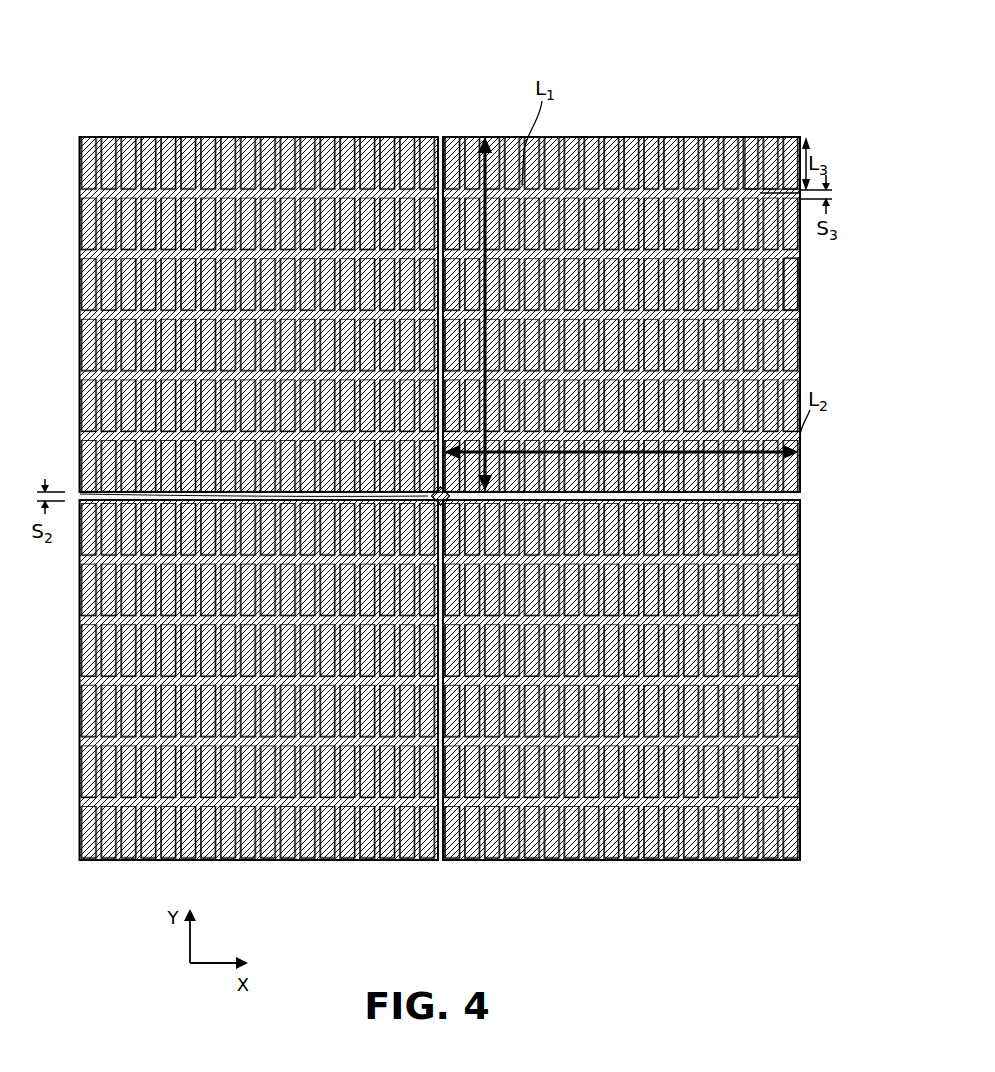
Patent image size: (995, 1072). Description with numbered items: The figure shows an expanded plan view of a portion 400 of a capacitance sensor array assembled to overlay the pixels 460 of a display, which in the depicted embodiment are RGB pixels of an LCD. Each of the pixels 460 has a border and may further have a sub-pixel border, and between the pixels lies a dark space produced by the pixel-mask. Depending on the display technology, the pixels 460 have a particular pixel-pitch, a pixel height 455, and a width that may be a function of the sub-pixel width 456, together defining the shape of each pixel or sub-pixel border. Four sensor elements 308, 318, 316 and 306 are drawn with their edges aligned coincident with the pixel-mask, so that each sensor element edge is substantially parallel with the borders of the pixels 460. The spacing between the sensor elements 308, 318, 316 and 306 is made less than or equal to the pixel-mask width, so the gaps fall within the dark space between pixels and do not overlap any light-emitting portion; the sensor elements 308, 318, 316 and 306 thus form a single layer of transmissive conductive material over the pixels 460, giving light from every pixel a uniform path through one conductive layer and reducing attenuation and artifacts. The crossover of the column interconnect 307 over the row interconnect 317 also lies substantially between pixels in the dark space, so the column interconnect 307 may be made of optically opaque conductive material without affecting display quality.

The portion of sensor array 400 is at (430, 435).
The pixels 460 is at (790, 137).
The sensor element 308 is at (253, 300).
The sensor element 318 is at (607, 300).
The sensor element 316 is at (251, 684).
The sensor element 306 is at (613, 684).
The row interconnect 317 is at (80, 494).
The column interconnect 307 is at (785, 496).
The pixel height 455 is at (800, 231).
The sub-pixel width 456 is at (790, 261).